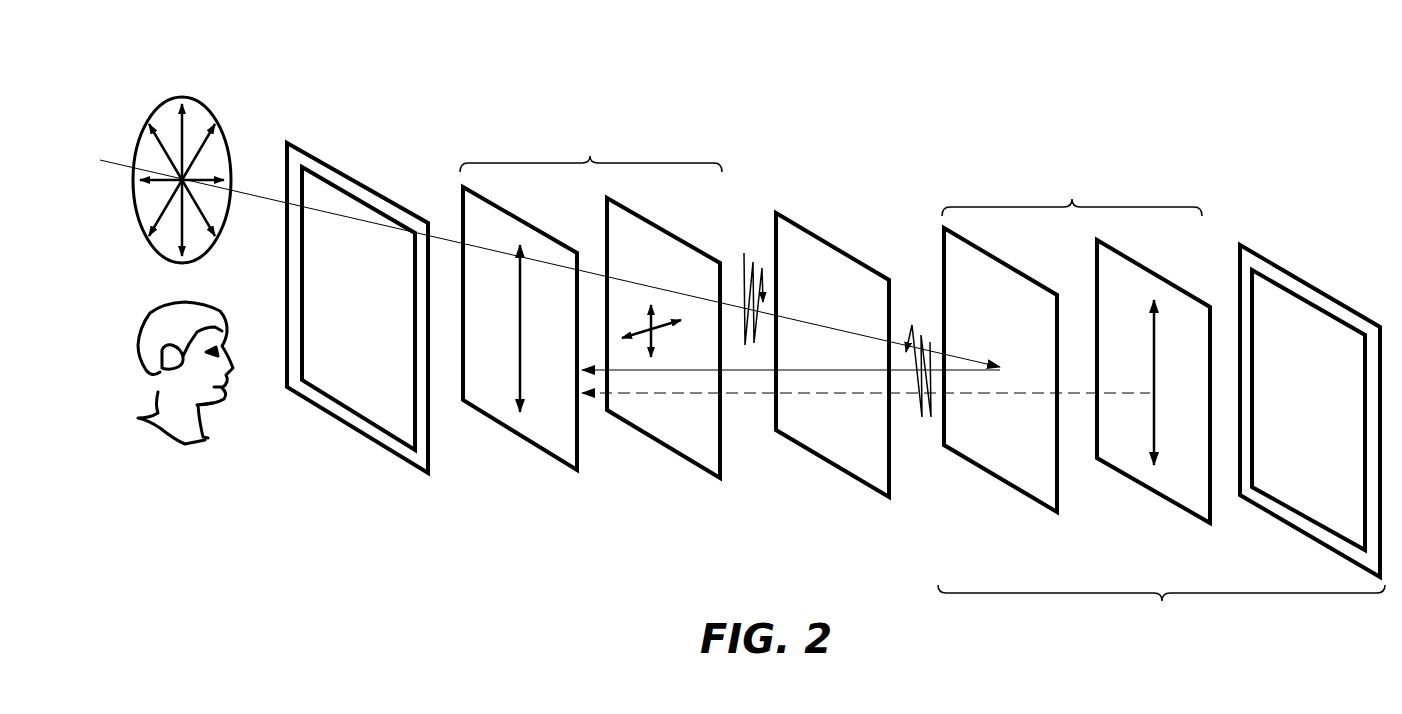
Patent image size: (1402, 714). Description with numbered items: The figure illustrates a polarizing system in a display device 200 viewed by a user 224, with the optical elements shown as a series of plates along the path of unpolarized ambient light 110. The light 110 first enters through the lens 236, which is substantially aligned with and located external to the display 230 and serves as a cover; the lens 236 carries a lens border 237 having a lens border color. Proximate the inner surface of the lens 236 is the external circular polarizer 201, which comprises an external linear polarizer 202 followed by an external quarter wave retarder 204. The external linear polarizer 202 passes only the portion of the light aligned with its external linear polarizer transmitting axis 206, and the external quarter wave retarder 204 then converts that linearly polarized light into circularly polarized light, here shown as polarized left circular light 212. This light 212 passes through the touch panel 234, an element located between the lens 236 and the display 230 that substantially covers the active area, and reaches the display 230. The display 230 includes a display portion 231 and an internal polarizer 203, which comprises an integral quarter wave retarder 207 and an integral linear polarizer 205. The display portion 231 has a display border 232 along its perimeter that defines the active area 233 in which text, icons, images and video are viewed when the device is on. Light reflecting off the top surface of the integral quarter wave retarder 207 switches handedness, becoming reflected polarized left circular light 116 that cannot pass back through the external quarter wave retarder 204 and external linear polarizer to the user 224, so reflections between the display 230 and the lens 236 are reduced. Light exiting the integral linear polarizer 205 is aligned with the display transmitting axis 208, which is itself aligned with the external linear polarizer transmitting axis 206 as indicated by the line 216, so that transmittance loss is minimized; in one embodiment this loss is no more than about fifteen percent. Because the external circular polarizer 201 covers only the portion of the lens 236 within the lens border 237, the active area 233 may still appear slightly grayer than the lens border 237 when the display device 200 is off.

The display device 200 is at (1262, 68).
The unpolarized ambient light 110 is at (162, 102).
The user 224 is at (172, 313).
The lens 236 is at (361, 182).
The lens border 237 is at (354, 424).
The external circular polarizer 201 is at (591, 152).
The external linear polarizer 202 is at (521, 219).
The external linear polarizer transmitting axis 206 is at (517, 328).
The external quarter wave retarder 204 is at (643, 217).
The polarized left circular light 212 is at (738, 283).
The touch panel 234 is at (833, 248).
The polarized left circular light 116 is at (910, 336).
The line 216 is at (797, 397).
The internal polarizer 203 is at (1072, 194).
The integral quarter wave retarder 207 is at (1001, 261).
The integral linear polarizer 205 is at (1154, 272).
The display transmitting axis 208 is at (1150, 343).
The display 230 is at (1161, 607).
The display portion 231 is at (1311, 283).
The active area 233 is at (1281, 490).
The display border 232 is at (1306, 526).